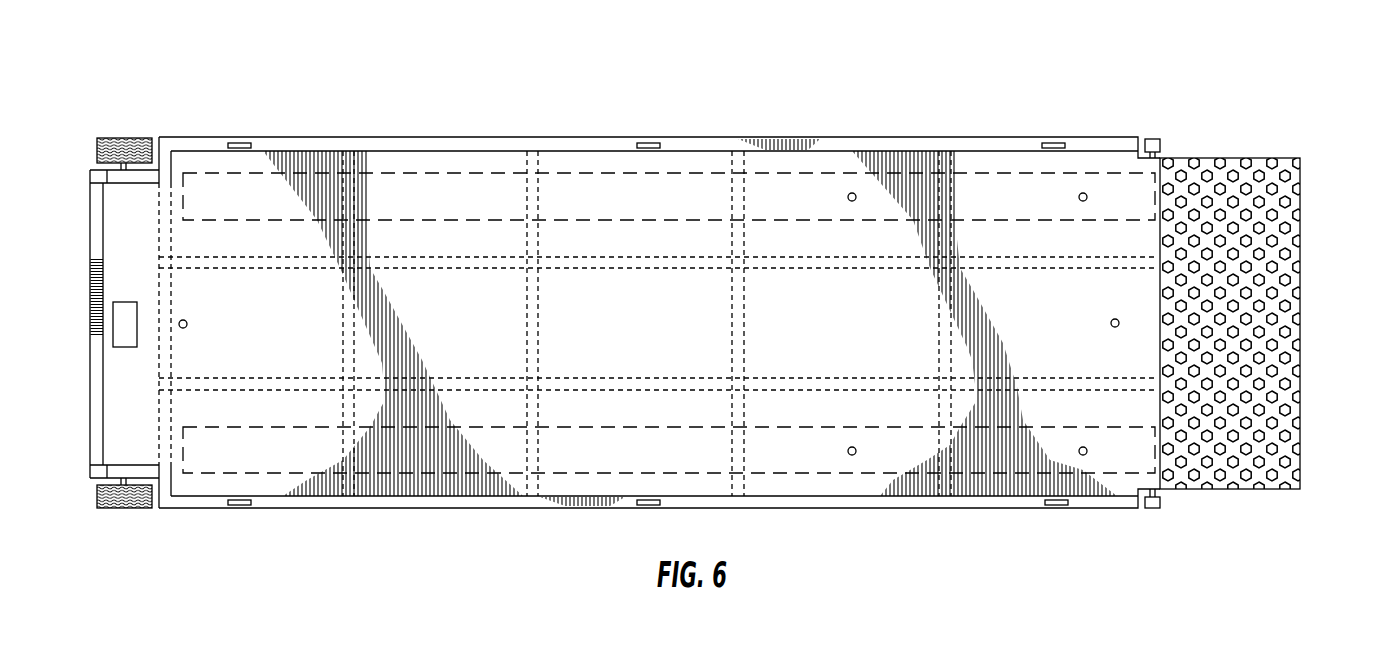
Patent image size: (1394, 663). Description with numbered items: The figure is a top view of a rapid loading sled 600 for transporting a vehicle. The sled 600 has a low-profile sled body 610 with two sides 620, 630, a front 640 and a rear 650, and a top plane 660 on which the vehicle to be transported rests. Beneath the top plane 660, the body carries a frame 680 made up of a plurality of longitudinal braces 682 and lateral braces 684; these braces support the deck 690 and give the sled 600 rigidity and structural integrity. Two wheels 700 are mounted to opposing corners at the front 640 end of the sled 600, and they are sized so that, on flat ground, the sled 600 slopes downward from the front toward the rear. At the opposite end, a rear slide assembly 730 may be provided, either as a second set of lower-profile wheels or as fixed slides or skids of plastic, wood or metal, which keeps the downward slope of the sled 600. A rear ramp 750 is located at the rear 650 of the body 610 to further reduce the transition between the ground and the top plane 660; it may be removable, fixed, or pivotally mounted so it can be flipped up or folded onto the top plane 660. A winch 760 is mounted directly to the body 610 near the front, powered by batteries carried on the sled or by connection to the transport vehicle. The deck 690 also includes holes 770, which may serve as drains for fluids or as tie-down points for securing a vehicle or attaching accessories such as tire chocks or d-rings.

The sled 600 is at (1026, 56).
The sled body 610 is at (578, 514).
The side 620 is at (186, 135).
The side 630 is at (186, 512).
The front 640 is at (87, 433).
The rear 650 is at (1308, 345).
The top plane 660 is at (580, 300).
The frame 680 is at (298, 518).
The longitudinal braces 682 is at (82, 286).
The lateral braces 684 is at (292, 128).
The deck 690 is at (1045, 235).
The wheels 700 is at (108, 130).
The rear slide assembly 730 is at (1165, 135).
The rear ramp 750 is at (1292, 210).
The winch 760 is at (125, 323).
The holes 770 is at (852, 193).